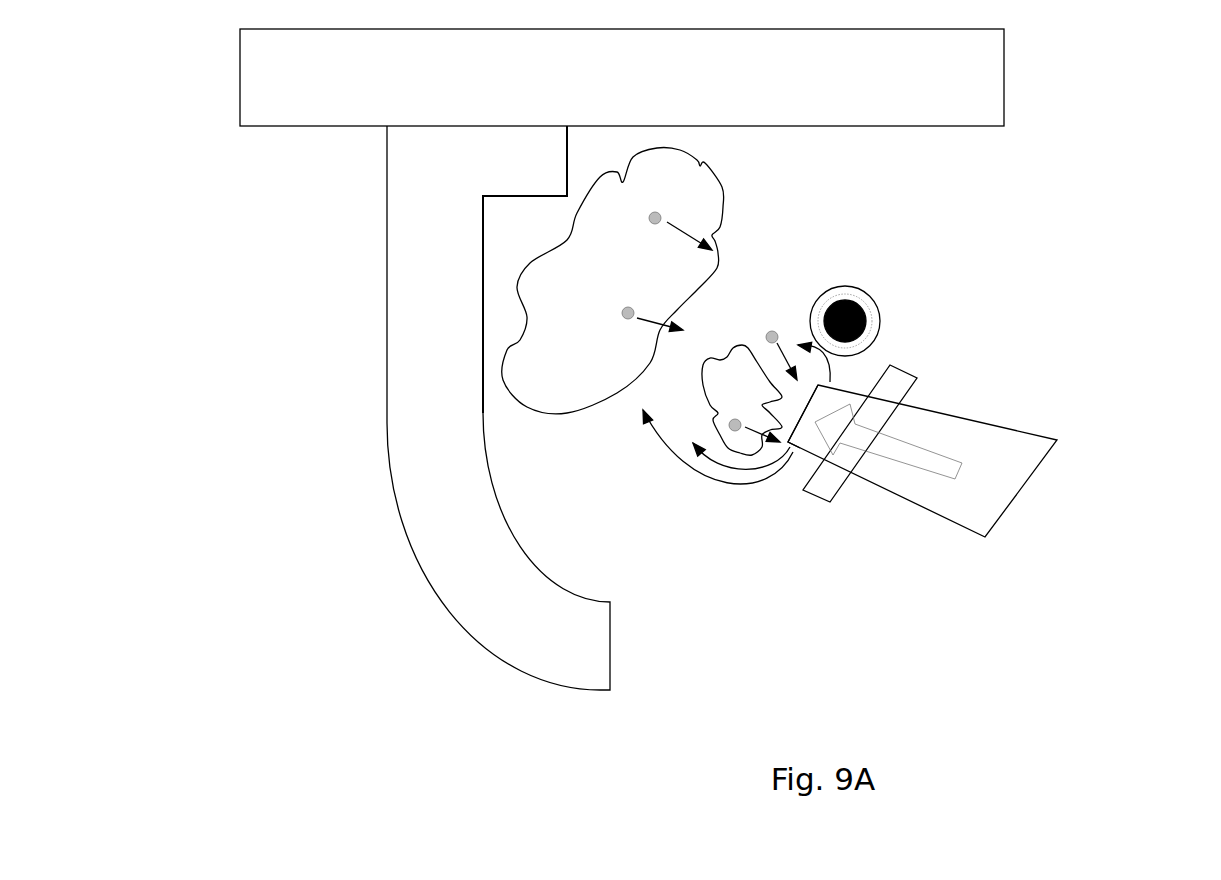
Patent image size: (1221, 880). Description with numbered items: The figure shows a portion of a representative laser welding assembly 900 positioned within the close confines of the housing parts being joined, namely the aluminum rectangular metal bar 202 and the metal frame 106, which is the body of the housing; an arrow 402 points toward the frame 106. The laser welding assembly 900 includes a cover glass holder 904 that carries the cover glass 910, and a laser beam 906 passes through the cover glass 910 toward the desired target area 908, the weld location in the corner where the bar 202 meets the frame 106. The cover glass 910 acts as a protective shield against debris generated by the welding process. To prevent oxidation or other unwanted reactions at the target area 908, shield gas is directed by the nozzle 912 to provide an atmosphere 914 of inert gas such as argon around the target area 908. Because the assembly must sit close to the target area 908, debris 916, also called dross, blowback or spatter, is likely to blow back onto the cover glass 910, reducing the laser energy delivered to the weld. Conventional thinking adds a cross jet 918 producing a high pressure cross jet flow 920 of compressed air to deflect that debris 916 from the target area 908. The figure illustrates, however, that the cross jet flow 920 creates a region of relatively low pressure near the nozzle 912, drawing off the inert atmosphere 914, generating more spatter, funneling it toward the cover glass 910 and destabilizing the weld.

The rectangular metal bar 202 is at (622, 77).
The target area 908 is at (525, 269).
The metal frame 106 is at (498, 408).
The direction arrow 402 is at (388, 473).
The atmosphere 914 is at (736, 182).
The debris 916 is at (655, 212).
The cross jet 918 is at (847, 271).
The cross jet flow 920 is at (870, 298).
The cover glass holder 904 is at (1020, 428).
The nozzle 912 is at (795, 452).
The cover glass 910 is at (902, 387).
The laser beam 906 is at (960, 468).
The laser welding assembly 900 is at (1065, 501).